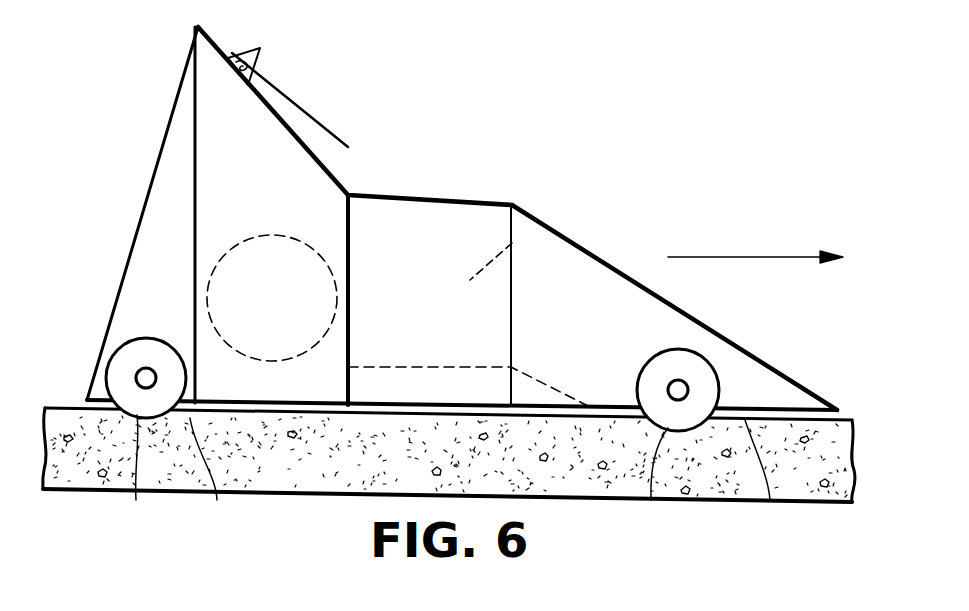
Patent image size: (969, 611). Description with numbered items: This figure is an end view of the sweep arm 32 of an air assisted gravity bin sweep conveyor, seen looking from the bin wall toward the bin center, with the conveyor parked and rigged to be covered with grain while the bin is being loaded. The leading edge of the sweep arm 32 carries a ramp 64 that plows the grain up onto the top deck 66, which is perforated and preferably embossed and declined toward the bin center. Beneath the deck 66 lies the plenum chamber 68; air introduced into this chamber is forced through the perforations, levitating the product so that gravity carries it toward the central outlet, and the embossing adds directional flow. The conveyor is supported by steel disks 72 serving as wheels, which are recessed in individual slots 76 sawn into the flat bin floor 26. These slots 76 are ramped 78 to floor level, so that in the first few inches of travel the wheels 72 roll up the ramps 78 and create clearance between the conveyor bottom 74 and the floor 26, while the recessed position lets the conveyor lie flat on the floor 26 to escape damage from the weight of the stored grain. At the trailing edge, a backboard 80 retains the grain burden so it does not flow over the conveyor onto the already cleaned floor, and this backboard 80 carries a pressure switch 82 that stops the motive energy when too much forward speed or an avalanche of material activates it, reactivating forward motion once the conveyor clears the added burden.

The flat bottom floor 26 is at (415, 405).
The sweep arm 32 is at (510, 178).
The ramp 64 is at (617, 273).
The deck 66 is at (452, 200).
The plenum chamber 68 is at (514, 241).
The steel disks 72 is at (123, 357).
The conveyor bottom 74 is at (373, 405).
The slots 76 is at (136, 500).
The ramps 78 is at (217, 500).
The backboard 80 is at (340, 190).
The pressure switch 82 is at (265, 63).